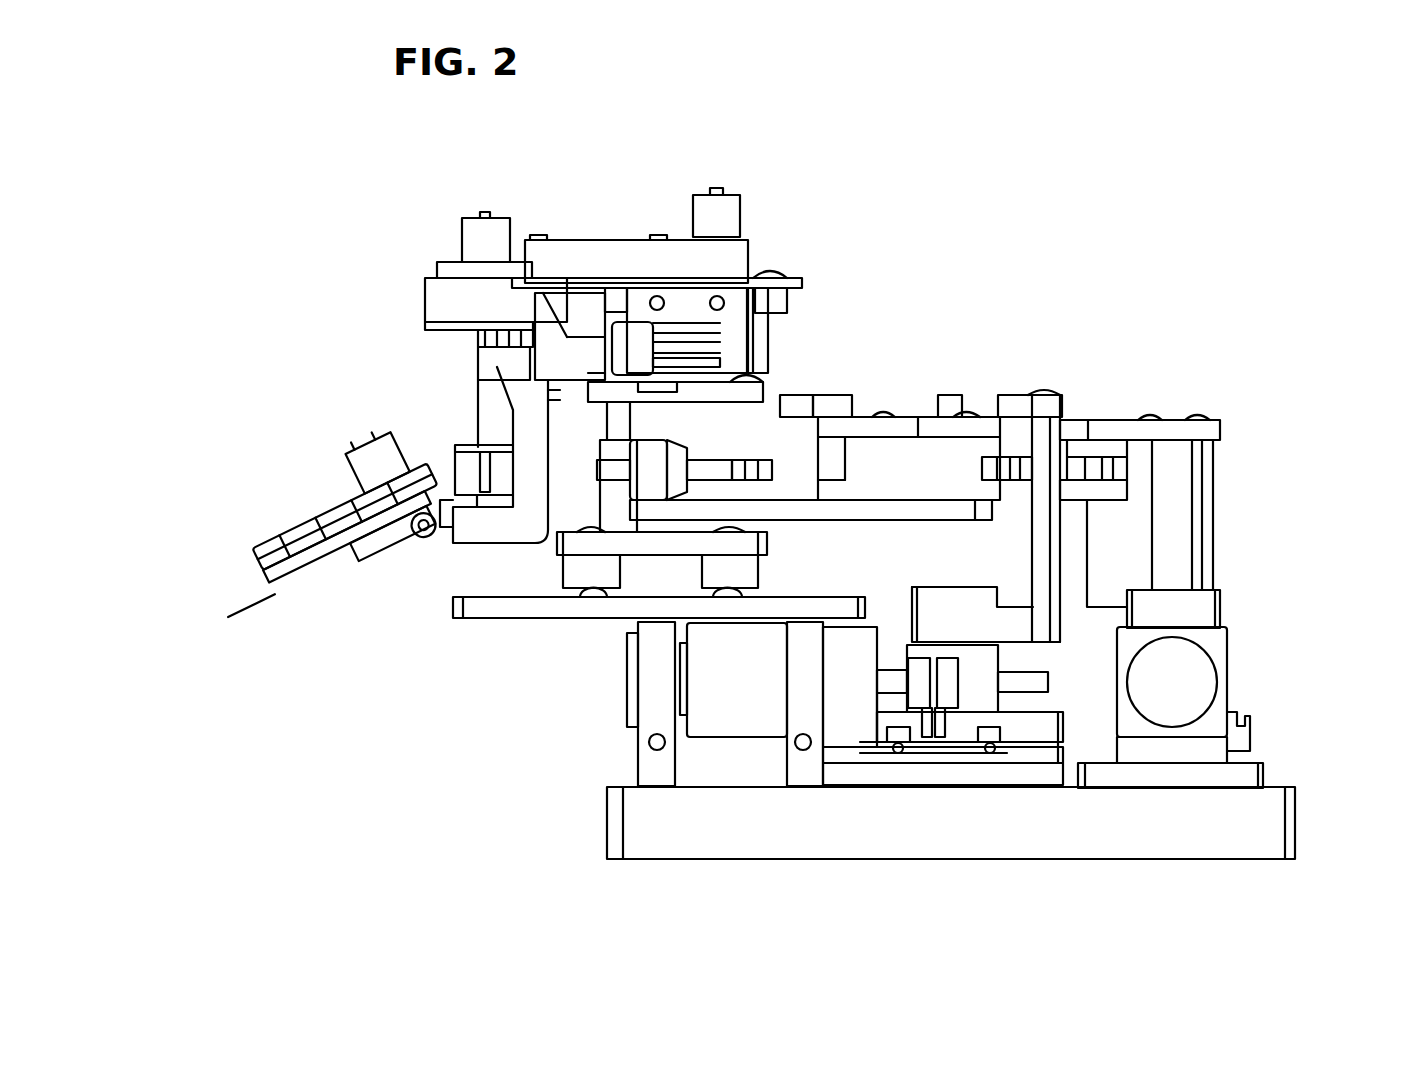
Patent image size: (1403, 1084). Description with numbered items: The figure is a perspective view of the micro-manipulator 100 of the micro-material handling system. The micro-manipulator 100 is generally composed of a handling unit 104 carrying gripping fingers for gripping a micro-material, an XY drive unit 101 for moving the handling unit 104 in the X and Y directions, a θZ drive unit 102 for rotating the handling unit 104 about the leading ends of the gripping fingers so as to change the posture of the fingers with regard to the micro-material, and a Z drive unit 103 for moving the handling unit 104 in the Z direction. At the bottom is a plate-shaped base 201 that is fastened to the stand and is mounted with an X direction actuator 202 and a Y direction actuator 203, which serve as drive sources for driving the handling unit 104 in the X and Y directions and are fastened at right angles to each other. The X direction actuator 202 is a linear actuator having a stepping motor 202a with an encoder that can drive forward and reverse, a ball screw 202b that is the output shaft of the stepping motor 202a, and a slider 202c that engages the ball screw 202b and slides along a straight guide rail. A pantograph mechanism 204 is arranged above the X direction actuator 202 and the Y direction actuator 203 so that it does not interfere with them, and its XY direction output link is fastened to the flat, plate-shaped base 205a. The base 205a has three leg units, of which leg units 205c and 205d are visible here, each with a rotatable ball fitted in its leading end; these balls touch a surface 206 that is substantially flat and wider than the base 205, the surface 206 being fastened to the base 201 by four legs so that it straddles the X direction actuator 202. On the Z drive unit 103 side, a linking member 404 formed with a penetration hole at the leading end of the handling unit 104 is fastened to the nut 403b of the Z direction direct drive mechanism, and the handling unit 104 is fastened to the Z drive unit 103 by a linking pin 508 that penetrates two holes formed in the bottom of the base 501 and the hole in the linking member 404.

The micro-manipulator 100 is at (815, 176).
The XY drive unit 101 is at (975, 363).
The θZ drive unit 102 is at (773, 251).
The Z drive unit 103 is at (356, 325).
The handling unit 104 is at (225, 534).
The base 201 is at (898, 841).
The X direction actuator 202 is at (734, 760).
The stepping motor 202a is at (718, 722).
The ball screw 202b is at (1023, 685).
The slider 202c is at (976, 688).
The Y direction actuator 203 is at (1245, 667).
The pantograph mechanism 204 is at (857, 375).
The base 205 is at (552, 545).
The base 205a is at (762, 540).
The leg unit 205c is at (583, 580).
The leg unit 205d is at (765, 567).
The surface 206 is at (453, 598).
The nut 403b is at (453, 466).
The linking member 404 is at (442, 505).
The base 501 is at (285, 602).
The linking pin 508 is at (428, 540).